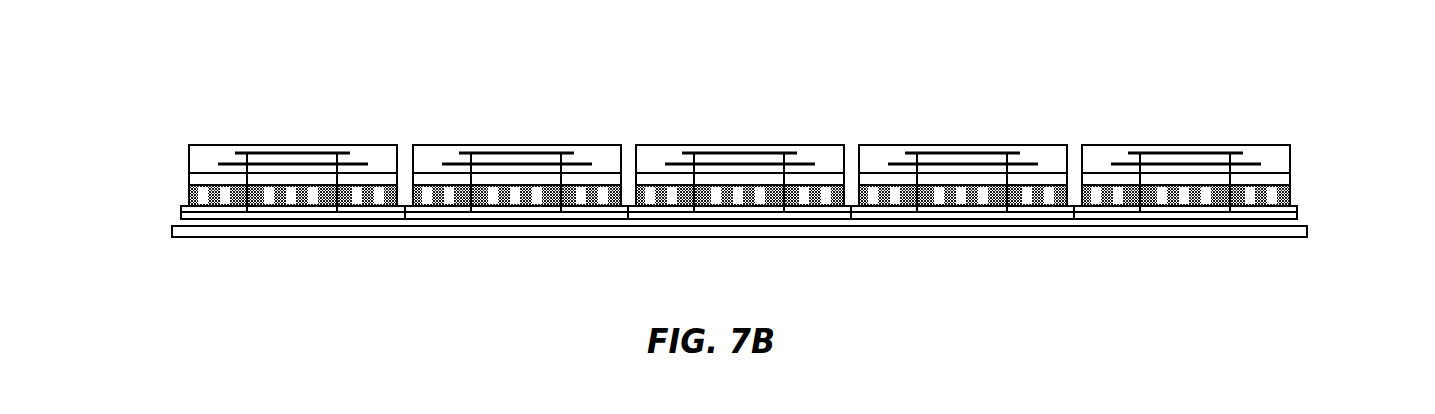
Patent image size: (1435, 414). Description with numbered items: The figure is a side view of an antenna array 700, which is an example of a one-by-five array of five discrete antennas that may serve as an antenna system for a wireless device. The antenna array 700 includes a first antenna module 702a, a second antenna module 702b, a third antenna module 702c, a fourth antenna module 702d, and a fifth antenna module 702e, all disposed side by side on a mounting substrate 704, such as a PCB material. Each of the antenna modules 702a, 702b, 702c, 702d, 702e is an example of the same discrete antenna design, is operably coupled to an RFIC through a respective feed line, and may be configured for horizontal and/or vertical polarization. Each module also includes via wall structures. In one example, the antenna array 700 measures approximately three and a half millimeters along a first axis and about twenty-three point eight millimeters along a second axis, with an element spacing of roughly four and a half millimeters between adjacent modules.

The antenna array 700 is at (162, 62).
The first antenna module 702a is at (383, 162).
The second antenna module 702b is at (603, 162).
The third antenna module 702c is at (820, 162).
The fourth antenna module 702d is at (1043, 162).
The fifth antenna module 702e is at (1262, 167).
The mounting substrate 704 is at (1307, 238).